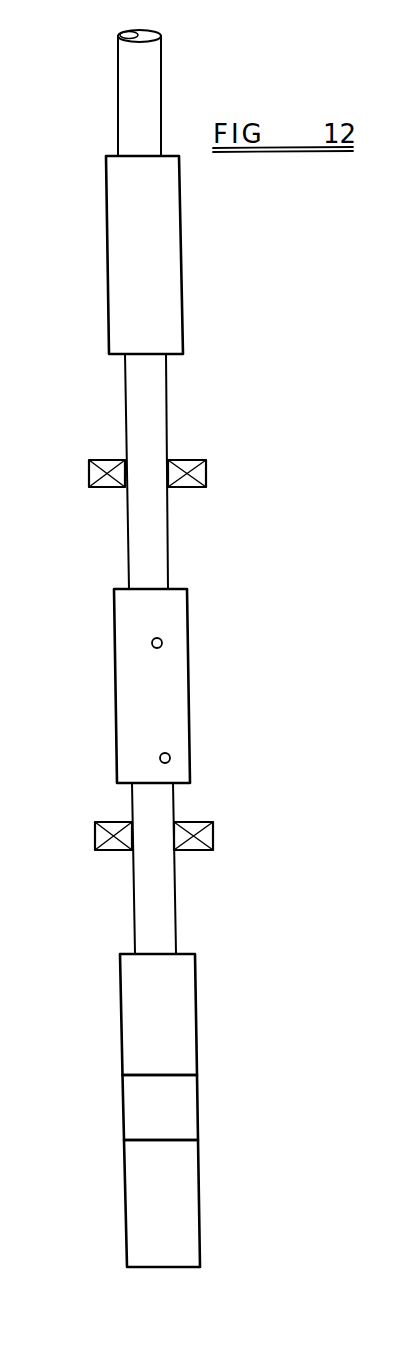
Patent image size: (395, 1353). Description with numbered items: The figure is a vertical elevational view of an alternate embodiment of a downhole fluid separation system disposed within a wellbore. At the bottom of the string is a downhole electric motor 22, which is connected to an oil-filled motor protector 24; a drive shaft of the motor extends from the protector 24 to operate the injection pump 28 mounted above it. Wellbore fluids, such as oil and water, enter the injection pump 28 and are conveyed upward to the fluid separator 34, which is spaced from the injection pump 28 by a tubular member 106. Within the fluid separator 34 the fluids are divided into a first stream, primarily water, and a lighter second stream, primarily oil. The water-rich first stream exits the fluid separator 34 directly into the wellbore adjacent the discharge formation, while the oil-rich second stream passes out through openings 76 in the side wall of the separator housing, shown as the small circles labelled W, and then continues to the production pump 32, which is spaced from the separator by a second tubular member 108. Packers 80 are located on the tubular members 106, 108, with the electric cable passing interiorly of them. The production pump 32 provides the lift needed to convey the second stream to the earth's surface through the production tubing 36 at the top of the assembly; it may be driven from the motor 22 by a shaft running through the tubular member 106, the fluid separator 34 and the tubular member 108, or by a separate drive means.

The downhole electric motor 22 is at (183, 1230).
The oil-filled motor protector 24 is at (132, 1108).
The injection pump 28 is at (173, 1000).
The production pump 32 is at (175, 237).
The fluid separator 34 is at (180, 670).
The production tubing 36 is at (148, 60).
The openings 76 is at (170, 766).
The packers 80 is at (102, 460).
The tubular member 106 is at (147, 907).
The tubular member 108 is at (160, 548).
The window / port W is at (152, 641).